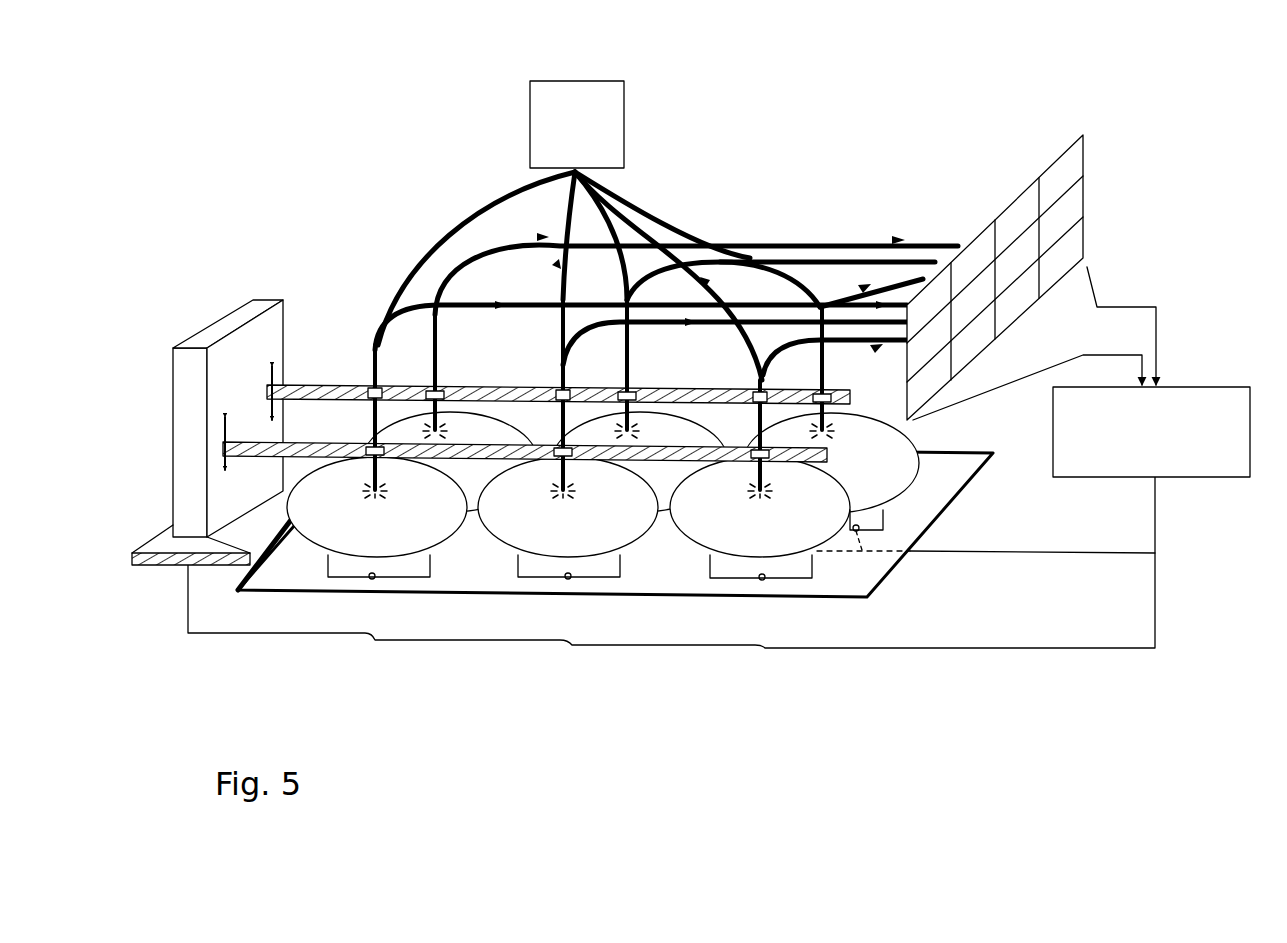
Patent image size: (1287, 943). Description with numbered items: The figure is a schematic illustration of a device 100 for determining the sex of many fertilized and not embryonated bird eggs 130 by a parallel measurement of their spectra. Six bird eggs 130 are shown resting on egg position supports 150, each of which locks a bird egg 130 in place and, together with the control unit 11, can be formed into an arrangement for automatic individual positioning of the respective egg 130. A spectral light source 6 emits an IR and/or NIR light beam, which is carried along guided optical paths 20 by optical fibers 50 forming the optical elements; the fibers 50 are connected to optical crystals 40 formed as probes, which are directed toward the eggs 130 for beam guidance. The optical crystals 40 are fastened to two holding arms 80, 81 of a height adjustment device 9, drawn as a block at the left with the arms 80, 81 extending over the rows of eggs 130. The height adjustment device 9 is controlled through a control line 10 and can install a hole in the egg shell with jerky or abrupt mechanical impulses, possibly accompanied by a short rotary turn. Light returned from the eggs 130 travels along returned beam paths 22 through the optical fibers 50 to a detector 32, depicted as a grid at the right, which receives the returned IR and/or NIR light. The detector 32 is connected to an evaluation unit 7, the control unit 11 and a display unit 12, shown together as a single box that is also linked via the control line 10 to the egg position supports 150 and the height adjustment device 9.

The device 100 is at (282, 122).
The spectral light source 6 is at (617, 104).
The guided optical paths 20 is at (519, 196).
The optical fibers 50 is at (466, 240).
The returned beam paths 22 is at (893, 240).
The detector 32 is at (1087, 198).
The height adjustment device 9 is at (185, 384).
The holding arm 81 is at (327, 385).
The holding arm 80 is at (313, 443).
The optical crystals 40 is at (381, 478).
The bird eggs 130 is at (390, 543).
The egg position support 150 is at (430, 563).
The control line 10 is at (1158, 549).
The evaluation unit 7 is at (1081, 372).
The control unit 11 is at (1081, 372).
The display unit 12 is at (1081, 372).